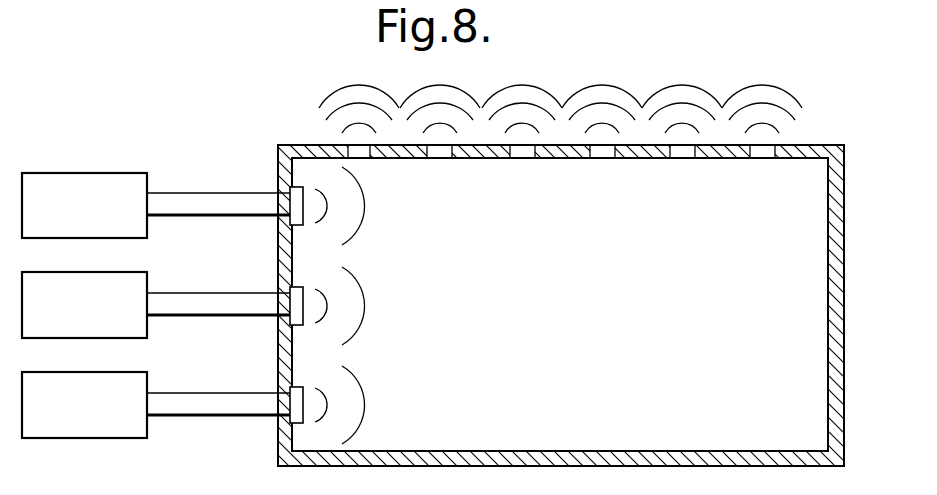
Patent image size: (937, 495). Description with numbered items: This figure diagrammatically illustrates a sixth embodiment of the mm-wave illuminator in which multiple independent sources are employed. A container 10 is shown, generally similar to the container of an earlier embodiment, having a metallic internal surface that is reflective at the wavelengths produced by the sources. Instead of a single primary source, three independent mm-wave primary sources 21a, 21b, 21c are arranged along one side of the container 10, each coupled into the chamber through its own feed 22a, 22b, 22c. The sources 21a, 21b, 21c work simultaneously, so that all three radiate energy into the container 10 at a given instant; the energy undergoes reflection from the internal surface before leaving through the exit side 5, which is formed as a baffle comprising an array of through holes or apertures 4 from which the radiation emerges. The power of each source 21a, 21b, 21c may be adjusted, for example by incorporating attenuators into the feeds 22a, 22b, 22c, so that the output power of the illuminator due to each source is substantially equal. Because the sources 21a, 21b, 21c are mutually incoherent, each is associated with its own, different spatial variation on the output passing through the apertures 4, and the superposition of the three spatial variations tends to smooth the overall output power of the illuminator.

The apertures 4 is at (349, 118).
The side 5 is at (640, 152).
The container 10 is at (277, 172).
The primary source 21a is at (57, 183).
The primary source 21b is at (70, 282).
The primary source 21c is at (97, 425).
The feed 22a is at (215, 205).
The feed 22b is at (213, 305).
The feed 22c is at (192, 405).